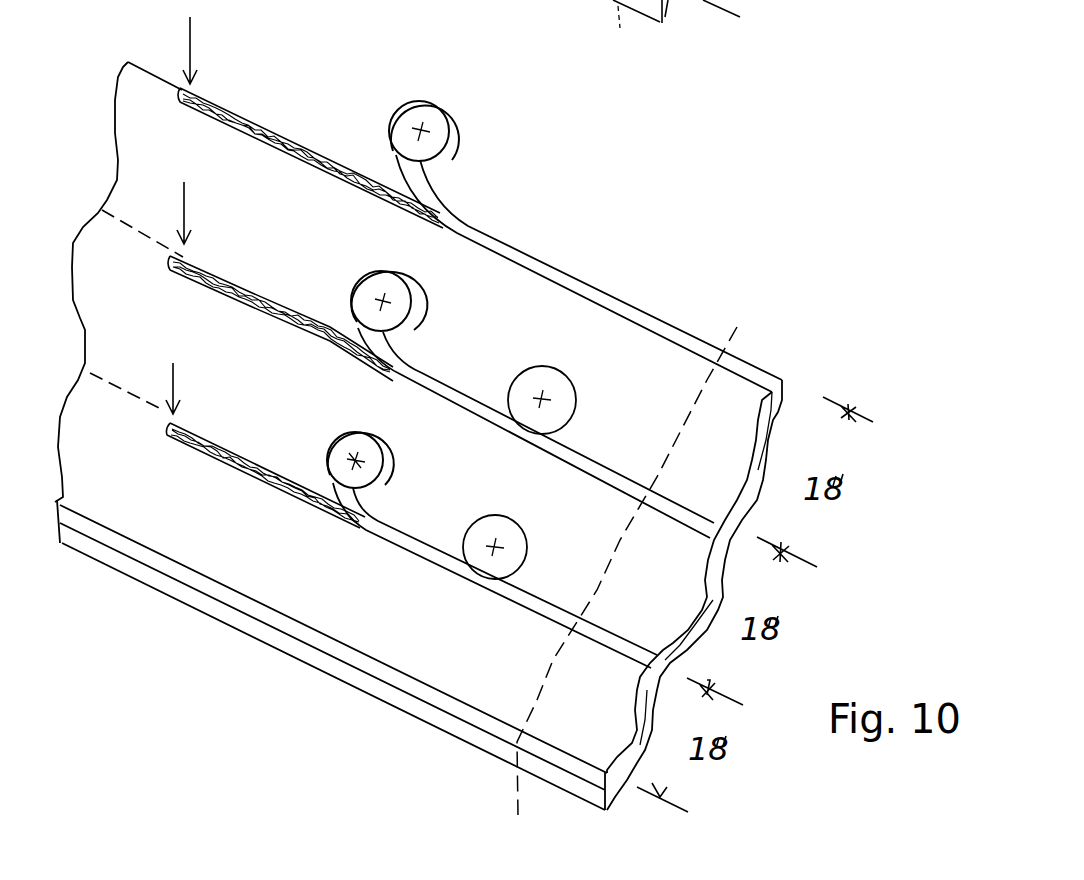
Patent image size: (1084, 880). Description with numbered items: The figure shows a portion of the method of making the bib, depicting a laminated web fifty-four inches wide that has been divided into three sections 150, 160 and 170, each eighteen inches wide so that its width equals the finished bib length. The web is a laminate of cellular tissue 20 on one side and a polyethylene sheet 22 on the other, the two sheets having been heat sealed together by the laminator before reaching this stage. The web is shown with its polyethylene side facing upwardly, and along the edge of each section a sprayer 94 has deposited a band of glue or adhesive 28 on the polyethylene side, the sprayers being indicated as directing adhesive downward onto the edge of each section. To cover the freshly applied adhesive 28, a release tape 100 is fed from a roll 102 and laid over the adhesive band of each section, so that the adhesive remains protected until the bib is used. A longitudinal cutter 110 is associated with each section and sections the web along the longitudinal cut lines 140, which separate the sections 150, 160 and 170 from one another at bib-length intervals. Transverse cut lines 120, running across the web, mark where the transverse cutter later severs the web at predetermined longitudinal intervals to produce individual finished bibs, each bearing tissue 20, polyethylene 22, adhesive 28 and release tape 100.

The cellular tissue 20 is at (85, 543).
The polyethylene sheet 22 is at (158, 560).
The adhesive 28 is at (270, 127).
The sprayer 94 is at (192, 33).
The release tape 100 is at (500, 247).
The roll 102 is at (403, 95).
The longitudinal cutter 110 is at (557, 367).
The transverse cut lines 120 is at (683, 416).
The longitudinal cut lines 140 is at (138, 228).
The first section 150 is at (590, 720).
The second section 160 is at (648, 604).
The third section 170 is at (680, 482).